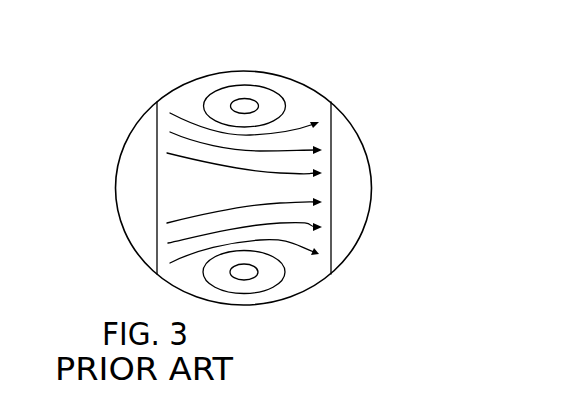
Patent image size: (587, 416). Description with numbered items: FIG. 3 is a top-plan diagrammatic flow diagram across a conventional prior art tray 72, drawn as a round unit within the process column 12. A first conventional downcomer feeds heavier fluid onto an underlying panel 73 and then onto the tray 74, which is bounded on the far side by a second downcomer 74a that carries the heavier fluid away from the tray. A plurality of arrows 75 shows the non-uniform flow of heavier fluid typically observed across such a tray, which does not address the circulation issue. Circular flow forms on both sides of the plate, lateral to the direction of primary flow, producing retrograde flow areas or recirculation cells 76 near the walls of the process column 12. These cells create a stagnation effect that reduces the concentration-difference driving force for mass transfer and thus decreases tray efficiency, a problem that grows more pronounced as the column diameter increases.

The pipe 12 is at (360, 138).
The flow direction 72 is at (306, 96).
The pipe wall region 73 is at (132, 225).
The boundary line 74 is at (164, 172).
The boundary line 74a is at (350, 223).
The flow streamlines 75 is at (178, 135).
The vortex 76 is at (236, 99).